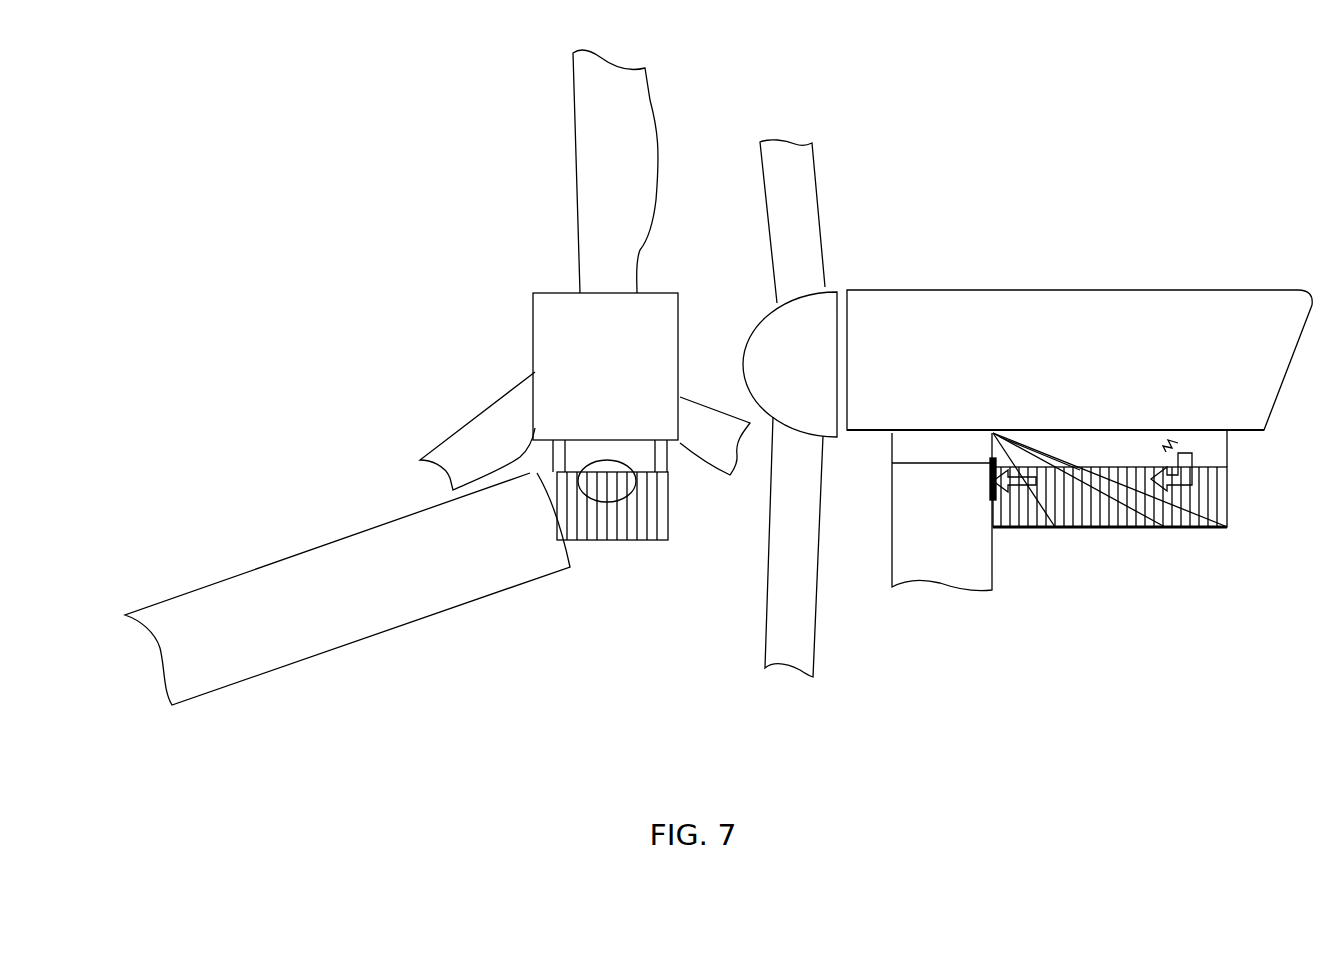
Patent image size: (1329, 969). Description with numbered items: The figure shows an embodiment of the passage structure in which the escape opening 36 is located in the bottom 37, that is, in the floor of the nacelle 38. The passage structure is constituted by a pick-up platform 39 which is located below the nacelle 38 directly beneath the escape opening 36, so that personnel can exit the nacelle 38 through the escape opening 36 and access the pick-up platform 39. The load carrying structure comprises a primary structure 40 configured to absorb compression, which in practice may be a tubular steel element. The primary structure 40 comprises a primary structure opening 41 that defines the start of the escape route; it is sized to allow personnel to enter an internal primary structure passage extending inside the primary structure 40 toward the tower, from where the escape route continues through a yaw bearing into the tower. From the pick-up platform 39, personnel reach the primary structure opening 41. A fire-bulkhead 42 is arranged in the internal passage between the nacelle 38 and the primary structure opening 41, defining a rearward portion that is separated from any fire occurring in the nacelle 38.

The escape opening 36 is at (1178, 443).
The bottom 37 is at (1105, 433).
The nacelle 38 is at (1050, 305).
The pick-up platform 39 is at (1115, 533).
The primary structure 40 is at (513, 587).
The primary structure opening 41 is at (607, 505).
The fire-bulkhead 42 is at (930, 467).